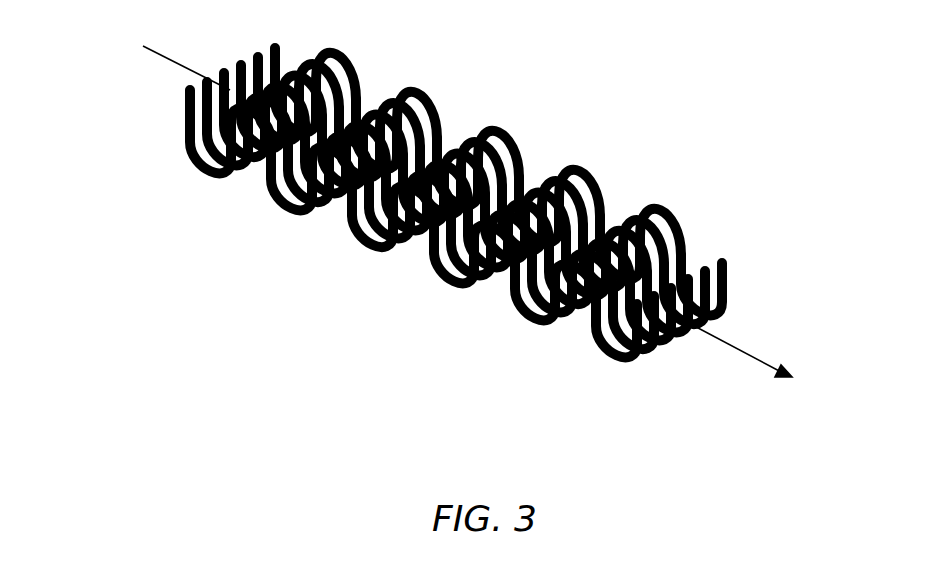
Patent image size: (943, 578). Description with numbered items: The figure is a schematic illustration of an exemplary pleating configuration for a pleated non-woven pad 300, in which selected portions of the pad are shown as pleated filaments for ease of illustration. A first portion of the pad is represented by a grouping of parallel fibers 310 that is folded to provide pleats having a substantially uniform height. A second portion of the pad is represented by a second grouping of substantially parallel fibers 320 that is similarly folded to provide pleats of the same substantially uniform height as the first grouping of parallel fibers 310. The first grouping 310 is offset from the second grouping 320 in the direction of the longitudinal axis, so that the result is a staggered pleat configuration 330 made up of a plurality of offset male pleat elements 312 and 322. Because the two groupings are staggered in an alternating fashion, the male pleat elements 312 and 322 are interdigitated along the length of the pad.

The pleated non-woven pad 300 is at (474, 205).
The grouping of parallel fibers 310 is at (447, 229).
The male pleat elements 312 is at (378, 165).
The second grouping of substantially parallel fibers 320 is at (454, 193).
The male pleat elements 322 is at (360, 150).
The staggered pleat configuration 330 is at (345, 68).